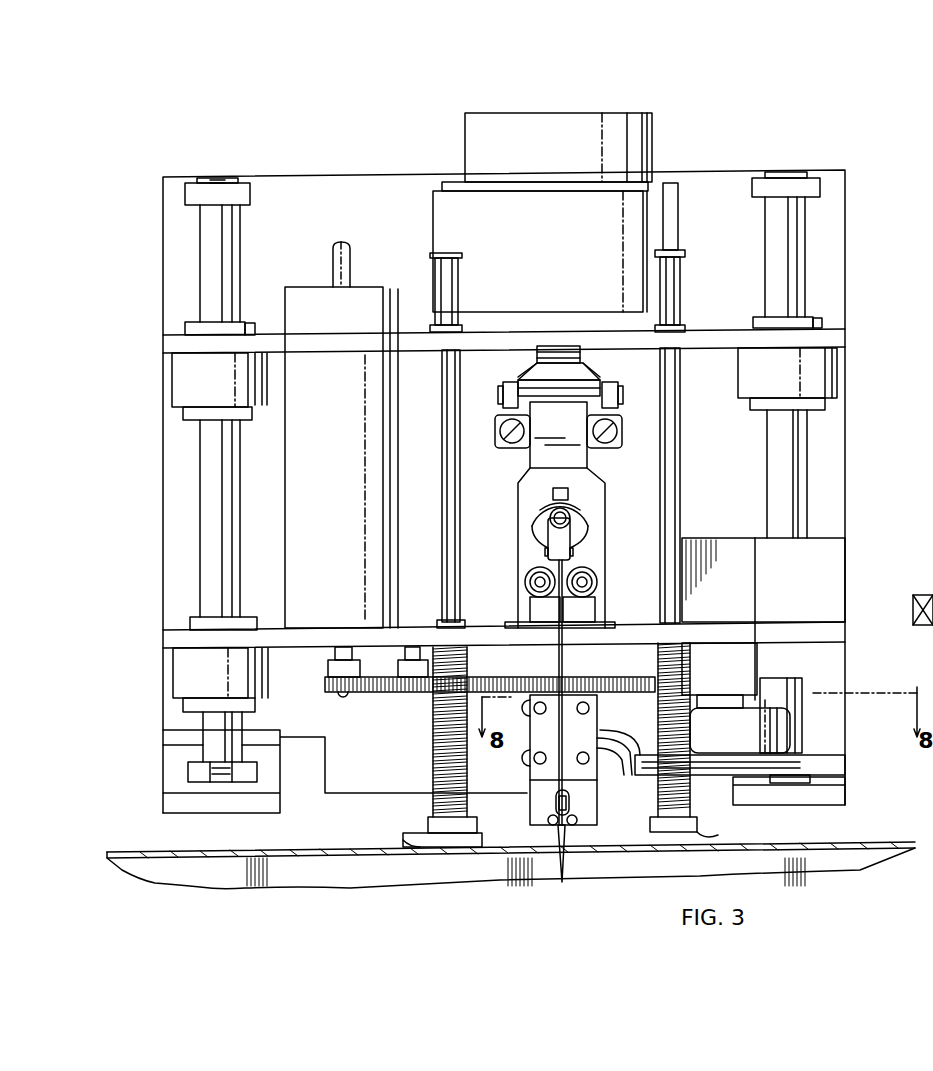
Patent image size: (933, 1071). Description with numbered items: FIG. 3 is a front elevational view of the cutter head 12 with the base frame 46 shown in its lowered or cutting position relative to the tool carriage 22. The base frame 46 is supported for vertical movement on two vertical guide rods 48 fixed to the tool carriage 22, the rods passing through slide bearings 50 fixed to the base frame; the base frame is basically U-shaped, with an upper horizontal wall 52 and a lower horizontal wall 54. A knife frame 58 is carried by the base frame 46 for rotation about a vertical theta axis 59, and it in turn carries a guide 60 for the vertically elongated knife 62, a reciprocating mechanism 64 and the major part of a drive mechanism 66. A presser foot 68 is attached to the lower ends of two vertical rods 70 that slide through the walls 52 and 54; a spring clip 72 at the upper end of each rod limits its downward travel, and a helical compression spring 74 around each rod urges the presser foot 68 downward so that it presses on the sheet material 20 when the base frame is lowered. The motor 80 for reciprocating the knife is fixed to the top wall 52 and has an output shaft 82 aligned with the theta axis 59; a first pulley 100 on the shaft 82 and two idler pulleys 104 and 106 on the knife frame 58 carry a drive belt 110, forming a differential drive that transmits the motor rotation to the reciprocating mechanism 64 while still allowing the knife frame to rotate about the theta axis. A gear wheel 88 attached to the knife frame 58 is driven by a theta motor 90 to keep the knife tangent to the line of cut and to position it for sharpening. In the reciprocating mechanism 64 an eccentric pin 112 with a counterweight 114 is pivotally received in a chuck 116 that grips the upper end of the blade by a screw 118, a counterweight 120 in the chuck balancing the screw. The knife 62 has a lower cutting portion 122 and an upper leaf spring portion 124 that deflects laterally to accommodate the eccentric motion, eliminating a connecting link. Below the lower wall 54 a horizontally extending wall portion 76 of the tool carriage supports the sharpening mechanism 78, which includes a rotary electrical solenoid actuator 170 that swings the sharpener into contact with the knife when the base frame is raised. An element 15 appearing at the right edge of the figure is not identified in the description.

The cutter head 12 is at (698, 106).
The frame 15 is at (924, 540).
The sheet material 20 is at (840, 846).
The tool carriage 22 is at (728, 188).
The base frame 46 is at (833, 447).
The vertical guide rods 48 is at (215, 493).
The slide bearings 50 is at (195, 385).
The upper horizontal wall 52 is at (172, 341).
The lower horizontal wall 54 is at (175, 641).
The knife frame 58 is at (518, 483).
The theta axis 59 is at (556, 113).
The guide 60 is at (535, 807).
The knife 62 is at (567, 850).
The reciprocating mechanism 64 is at (595, 528).
The drive mechanism 66 is at (636, 413).
The presser foot 68 is at (705, 831).
The vertical rods 70 is at (450, 398).
The spring clip 72 is at (462, 257).
The helical compression spring 74 is at (435, 770).
The horizontally extending wall portion 76 is at (810, 767).
The sharpening mechanism 78 is at (819, 717).
The motor 80 is at (625, 143).
The output shaft 82 is at (558, 435).
The gear wheel 88 is at (660, 669).
The theta motor 90 is at (310, 455).
The first pulley 100 is at (577, 363).
The idler pulley 104 is at (525, 393).
The idler pulley 106 is at (590, 390).
The drive belt 110 is at (543, 377).
The eccentric pin 112 is at (550, 516).
The counterweight 114 is at (588, 499).
The chuck 116 is at (550, 527).
The screw 118 is at (575, 548).
The counterweight 120 is at (560, 490).
The lower cutting portion 122 is at (560, 862).
The upper leaf spring portion 124 is at (540, 565).
The rotary electrical solenoid actuator 170 is at (778, 738).